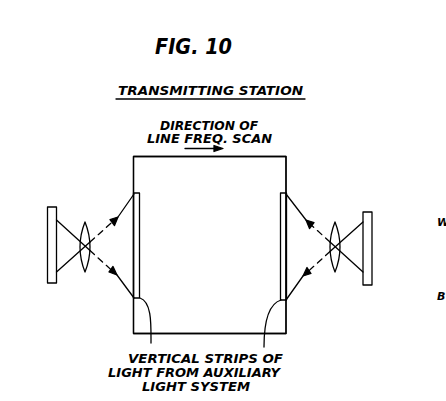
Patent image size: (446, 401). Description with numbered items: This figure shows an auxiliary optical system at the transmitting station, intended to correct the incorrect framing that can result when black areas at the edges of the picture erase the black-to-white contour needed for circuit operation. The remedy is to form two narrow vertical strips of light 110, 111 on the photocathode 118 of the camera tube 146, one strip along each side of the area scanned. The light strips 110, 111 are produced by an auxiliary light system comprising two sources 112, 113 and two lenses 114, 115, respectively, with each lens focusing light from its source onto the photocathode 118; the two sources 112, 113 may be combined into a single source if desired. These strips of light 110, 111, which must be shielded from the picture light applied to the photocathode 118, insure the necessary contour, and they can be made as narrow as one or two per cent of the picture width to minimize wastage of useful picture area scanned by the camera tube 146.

The vertical strip of light 110 is at (140, 273).
The vertical strip of light 111 is at (280, 267).
The light source 112 is at (52, 283).
The light source 113 is at (366, 285).
The lens 114 is at (84, 268).
The lens 115 is at (335, 272).
The photocathode 118 is at (210, 245).
The camera tube 146 is at (276, 176).